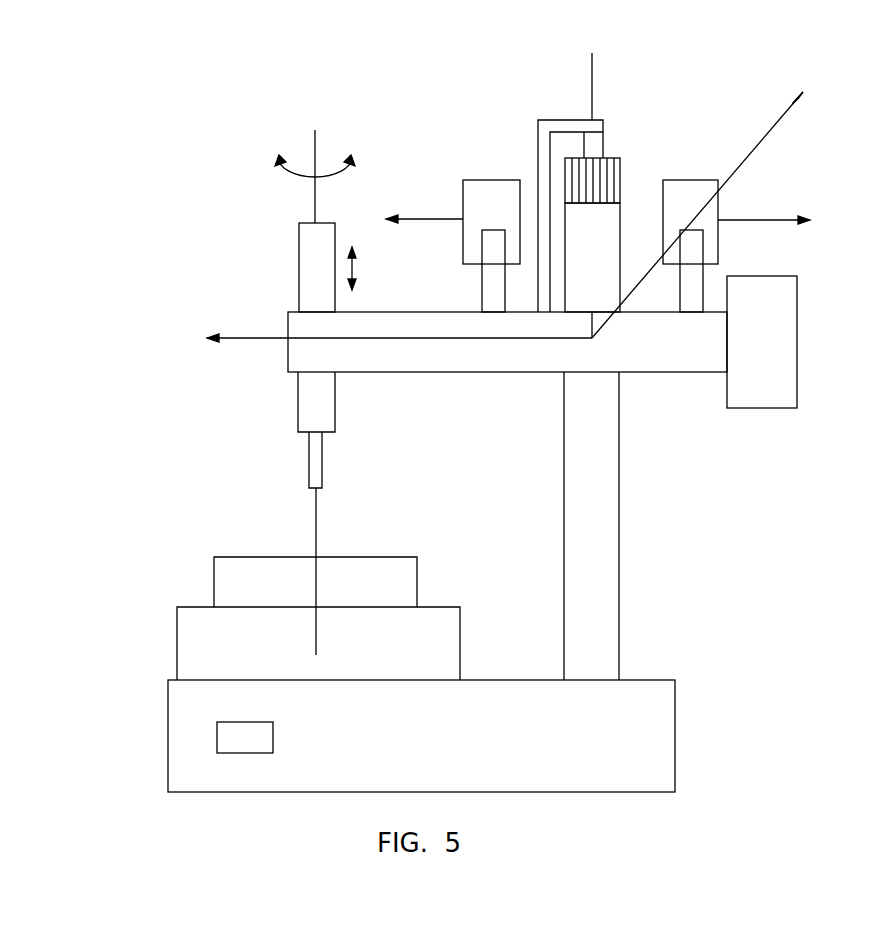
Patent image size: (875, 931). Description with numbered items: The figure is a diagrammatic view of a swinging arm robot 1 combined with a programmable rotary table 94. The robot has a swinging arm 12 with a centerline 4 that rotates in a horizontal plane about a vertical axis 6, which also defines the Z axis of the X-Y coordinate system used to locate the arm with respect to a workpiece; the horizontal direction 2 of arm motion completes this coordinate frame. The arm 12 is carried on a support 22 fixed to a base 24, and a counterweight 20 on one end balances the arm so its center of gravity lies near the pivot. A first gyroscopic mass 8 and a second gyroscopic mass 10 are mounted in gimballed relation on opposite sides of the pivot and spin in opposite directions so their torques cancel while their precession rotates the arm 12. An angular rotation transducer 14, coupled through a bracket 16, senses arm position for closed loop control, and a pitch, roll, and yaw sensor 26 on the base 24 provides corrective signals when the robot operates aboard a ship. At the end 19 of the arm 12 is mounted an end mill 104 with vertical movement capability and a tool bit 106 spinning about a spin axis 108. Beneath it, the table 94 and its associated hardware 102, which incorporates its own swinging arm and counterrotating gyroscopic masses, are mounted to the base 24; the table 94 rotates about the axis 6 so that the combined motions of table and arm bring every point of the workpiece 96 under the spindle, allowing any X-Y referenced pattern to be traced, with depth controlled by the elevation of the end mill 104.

The swinging arm robot 1 is at (455, 103).
The X axis direction 2 is at (777, 118).
The centerline 4 is at (256, 336).
The axis 6 is at (593, 88).
The first gyroscopic mass 8 is at (478, 179).
The second gyroscopic mass 10 is at (719, 202).
The swinging arm 12 is at (482, 373).
The angular rotation transducer 14 is at (620, 167).
The bracket 16 is at (547, 118).
The end 19 is at (288, 350).
The counterweight 20 is at (797, 343).
The support 22 is at (620, 505).
The base 24 is at (450, 735).
The pitch, roll, and yaw sensor 26 is at (273, 733).
The rotary table 94 is at (448, 597).
The workpiece 96 is at (214, 580).
The associated hardware 102 is at (177, 645).
The end mill 104 is at (299, 241).
The tool bit 106 is at (307, 473).
The spin axis 108 is at (315, 140).